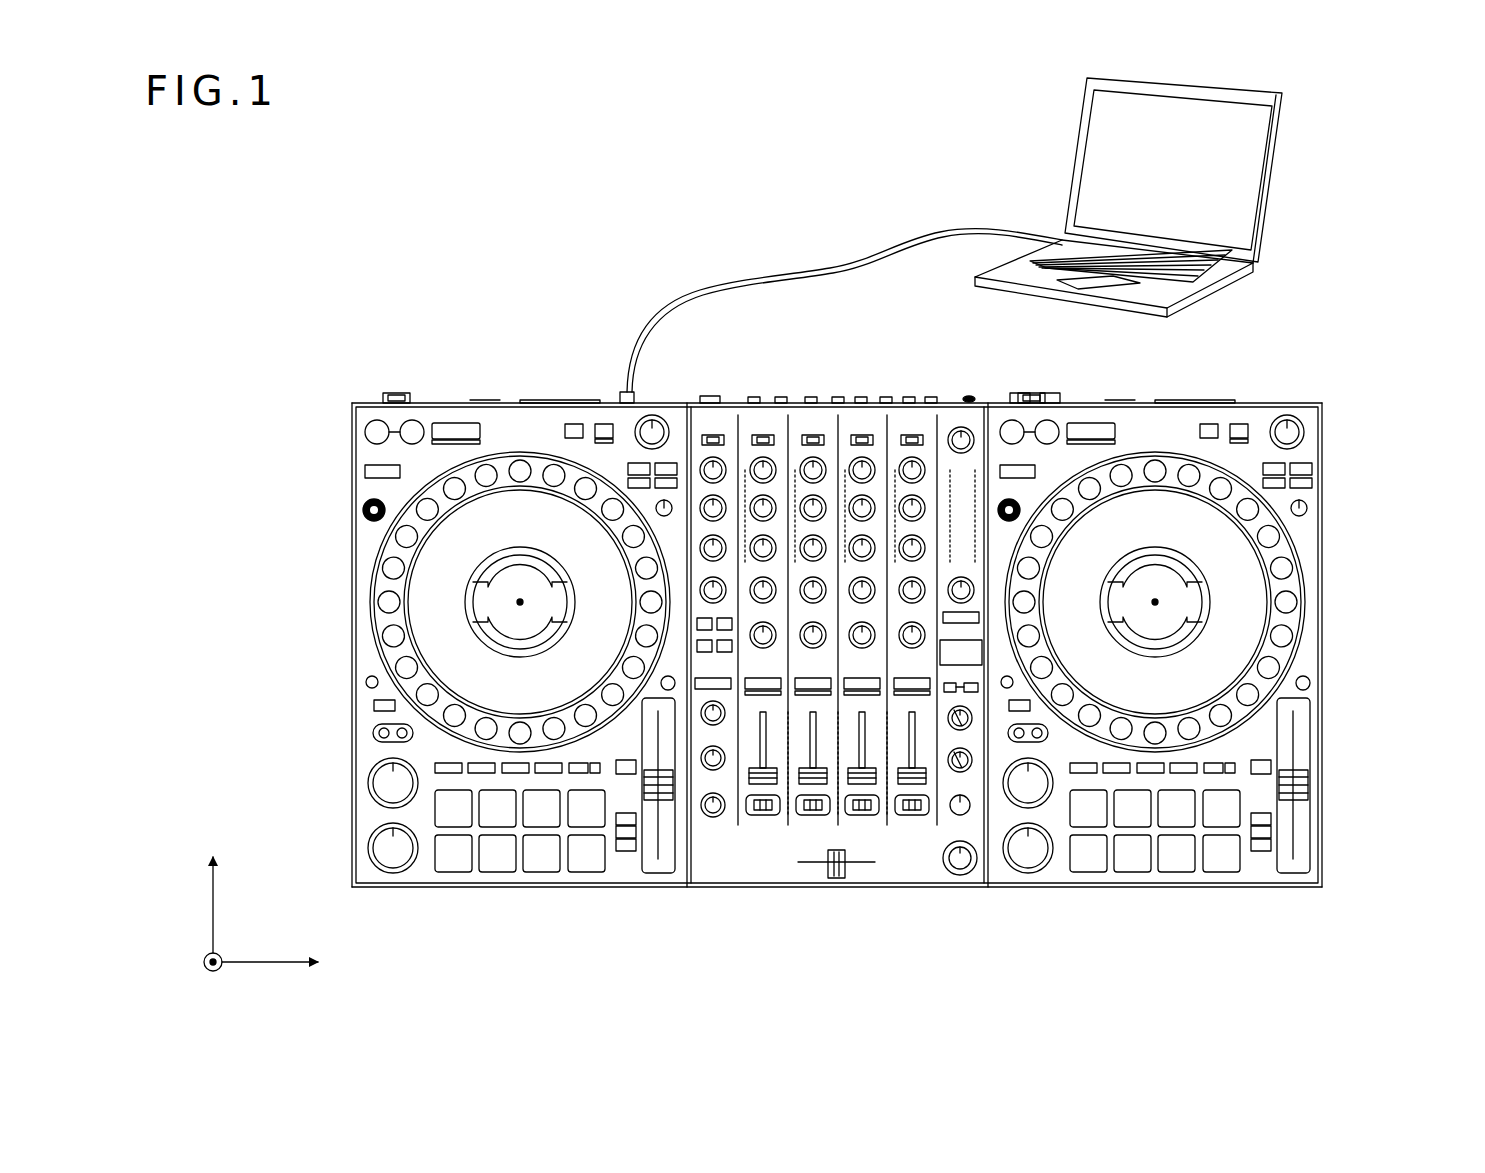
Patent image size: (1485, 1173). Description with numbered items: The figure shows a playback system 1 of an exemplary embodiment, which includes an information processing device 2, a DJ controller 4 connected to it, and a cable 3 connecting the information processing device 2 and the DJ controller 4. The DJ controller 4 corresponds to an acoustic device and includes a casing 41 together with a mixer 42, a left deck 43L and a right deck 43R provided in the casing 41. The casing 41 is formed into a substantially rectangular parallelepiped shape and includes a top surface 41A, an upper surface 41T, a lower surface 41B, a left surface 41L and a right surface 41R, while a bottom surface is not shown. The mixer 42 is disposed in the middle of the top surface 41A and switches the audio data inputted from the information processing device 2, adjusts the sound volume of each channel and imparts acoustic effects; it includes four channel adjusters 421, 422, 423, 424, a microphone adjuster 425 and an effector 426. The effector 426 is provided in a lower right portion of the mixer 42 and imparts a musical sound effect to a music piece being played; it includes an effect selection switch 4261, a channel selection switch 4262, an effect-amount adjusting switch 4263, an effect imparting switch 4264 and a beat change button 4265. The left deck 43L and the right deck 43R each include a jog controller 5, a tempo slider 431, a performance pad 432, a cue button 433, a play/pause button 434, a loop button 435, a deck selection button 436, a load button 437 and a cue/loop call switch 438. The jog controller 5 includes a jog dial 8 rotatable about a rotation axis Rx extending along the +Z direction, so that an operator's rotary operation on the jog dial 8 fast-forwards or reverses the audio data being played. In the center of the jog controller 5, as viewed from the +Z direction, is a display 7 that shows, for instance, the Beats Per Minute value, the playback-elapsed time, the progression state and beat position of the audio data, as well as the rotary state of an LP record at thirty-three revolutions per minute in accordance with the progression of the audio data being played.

The playback system 1 is at (540, 148).
The information processing device 2 is at (1250, 163).
The cable 3 is at (820, 268).
The DJ controller 4 is at (542, 418).
The jog controller 5 is at (432, 600).
The jog dial 8 is at (833, 602).
The display 7 is at (521, 600).
The casing 41 is at (1320, 403).
The top surface 41A is at (1310, 540).
The left surface 41L is at (352, 437).
The right surface 41R is at (1322, 440).
The upper surface 41T is at (1225, 402).
The lower surface 41B is at (440, 887).
The mixer 42 is at (968, 400).
The left deck 43L is at (495, 422).
The right deck 43R is at (1160, 432).
The channel adjuster 421 is at (763, 418).
The channel adjuster 422 is at (813, 418).
The channel adjuster 423 is at (862, 418).
The channel adjuster 424 is at (912, 418).
The microphone adjuster 425 is at (713, 418).
The effector 426 is at (1003, 938).
The effect selection switch 4261 is at (958, 730).
The channel selection switch 4262 is at (958, 772).
The effect-amount adjusting switch 4263 is at (958, 815).
The effect imparting switch 4264 is at (962, 875).
The beat change button 4265 is at (948, 694).
The tempo slider 431 is at (660, 790).
The performance pad 432 is at (540, 855).
The cue button 433 is at (393, 783).
The play/pause button 434 is at (393, 848).
The loop button 435 is at (414, 428).
The deck selection button 436 is at (365, 512).
The load button 437 is at (652, 428).
The cue/loop call switch 438 is at (375, 733).